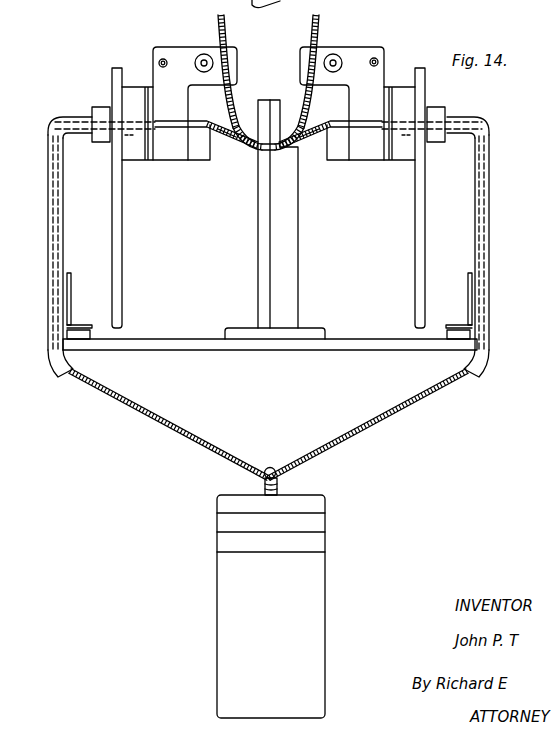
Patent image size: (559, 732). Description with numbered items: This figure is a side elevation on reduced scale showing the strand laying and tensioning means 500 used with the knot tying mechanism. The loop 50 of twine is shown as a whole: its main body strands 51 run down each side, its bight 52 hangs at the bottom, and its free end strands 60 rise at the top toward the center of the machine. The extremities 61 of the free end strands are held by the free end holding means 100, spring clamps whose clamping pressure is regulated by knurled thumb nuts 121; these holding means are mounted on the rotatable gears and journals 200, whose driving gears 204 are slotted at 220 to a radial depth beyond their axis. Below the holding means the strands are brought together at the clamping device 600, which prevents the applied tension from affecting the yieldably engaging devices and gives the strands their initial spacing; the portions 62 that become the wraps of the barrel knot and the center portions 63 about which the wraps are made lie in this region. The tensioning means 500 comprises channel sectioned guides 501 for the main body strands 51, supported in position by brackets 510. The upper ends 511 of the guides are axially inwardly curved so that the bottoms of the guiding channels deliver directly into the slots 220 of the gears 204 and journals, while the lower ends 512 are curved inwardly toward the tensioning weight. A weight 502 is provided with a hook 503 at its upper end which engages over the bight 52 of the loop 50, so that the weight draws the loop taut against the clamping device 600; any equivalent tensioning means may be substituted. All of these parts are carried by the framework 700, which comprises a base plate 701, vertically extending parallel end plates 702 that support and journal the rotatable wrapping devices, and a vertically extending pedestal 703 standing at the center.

The loop 50 is at (448, 385).
The main body strands 51 is at (197, 120).
The bight 52 is at (242, 448).
The free end strands 60 is at (231, 97).
The extremities 61 is at (224, 20).
The wraps or turns 62 is at (272, 128).
The center portions 63 is at (234, 140).
The free end holding means 100 is at (269, 94).
The knurled thumb nuts 121 is at (197, 66).
The rotatable gears and journals 200 is at (268, 134).
The driving gears 204 is at (98, 108).
The slots 220 is at (132, 127).
The strand laying and tensioning means 500 is at (310, 472).
The channel sectioned guides 501 is at (50, 233).
The weight 502 is at (312, 570).
The hook 503 is at (275, 467).
The brackets 510 is at (70, 303).
The upper ends of guides 511 is at (57, 121).
The lower ends of guides 512 is at (57, 368).
The clamping device 600 is at (267, 97).
The framework 700 is at (270, 334).
The base plate 701 is at (389, 324).
The end plates 702 is at (121, 242).
The pedestal 703 is at (283, 283).